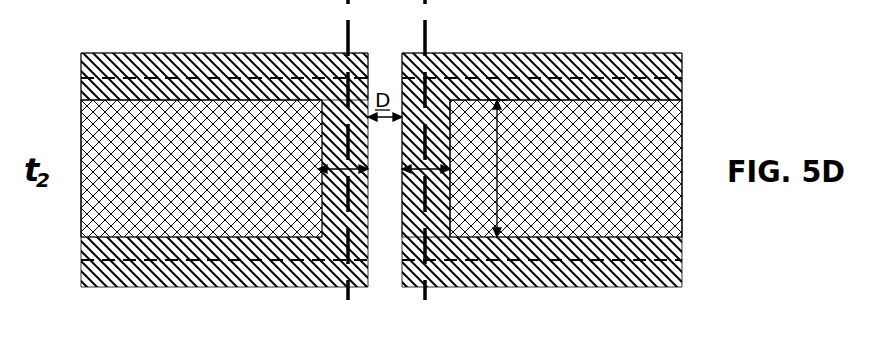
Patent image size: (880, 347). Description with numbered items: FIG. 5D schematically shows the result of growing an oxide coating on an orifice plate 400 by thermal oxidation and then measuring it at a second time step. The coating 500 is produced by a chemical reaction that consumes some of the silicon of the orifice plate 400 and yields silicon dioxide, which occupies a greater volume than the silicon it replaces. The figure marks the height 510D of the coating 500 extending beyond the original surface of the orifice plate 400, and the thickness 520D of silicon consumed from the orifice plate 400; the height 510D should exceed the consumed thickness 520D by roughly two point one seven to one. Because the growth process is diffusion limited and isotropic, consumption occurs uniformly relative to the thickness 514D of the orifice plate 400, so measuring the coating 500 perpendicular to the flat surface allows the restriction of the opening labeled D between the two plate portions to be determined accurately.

The orifice plate 400 is at (216, 180).
The coating 500 is at (700, 53).
The height of coating 510D is at (183, 100).
The thickness of orifice plate 514D is at (583, 180).
The thickness of silicon consumed 520D is at (426, 132).